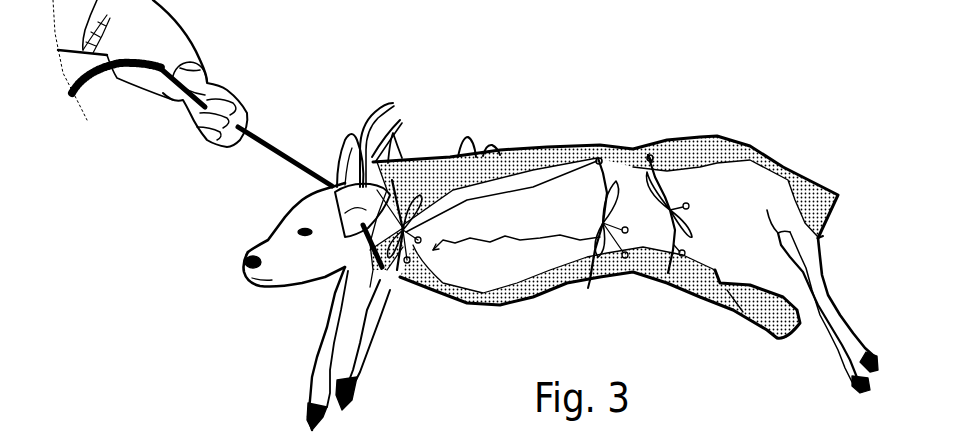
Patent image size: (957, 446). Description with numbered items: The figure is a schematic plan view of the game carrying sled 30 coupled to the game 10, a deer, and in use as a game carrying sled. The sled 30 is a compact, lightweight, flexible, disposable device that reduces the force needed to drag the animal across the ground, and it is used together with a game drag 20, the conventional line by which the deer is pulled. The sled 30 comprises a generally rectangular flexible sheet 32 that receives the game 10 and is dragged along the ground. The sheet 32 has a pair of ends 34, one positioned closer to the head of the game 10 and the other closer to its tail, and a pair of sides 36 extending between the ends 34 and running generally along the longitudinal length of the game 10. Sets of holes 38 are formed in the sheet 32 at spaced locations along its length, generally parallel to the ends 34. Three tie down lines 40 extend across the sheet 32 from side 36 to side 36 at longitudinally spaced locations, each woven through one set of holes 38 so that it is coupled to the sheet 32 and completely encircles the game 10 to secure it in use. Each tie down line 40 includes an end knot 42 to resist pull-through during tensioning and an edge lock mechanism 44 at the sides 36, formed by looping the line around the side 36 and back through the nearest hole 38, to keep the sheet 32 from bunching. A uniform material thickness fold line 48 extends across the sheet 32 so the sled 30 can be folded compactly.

The game 10 is at (715, 222).
The game drag 20 is at (283, 150).
The game carrying sled 30 is at (500, 111).
The flexible sheet 32 is at (450, 173).
The end 34 is at (824, 242).
The side 36 is at (783, 160).
The holes 38 is at (626, 152).
The tie down line 40 is at (603, 173).
The end knot 42 is at (641, 275).
The edge lock mechanism 44 is at (580, 263).
The fold line 48 is at (683, 135).